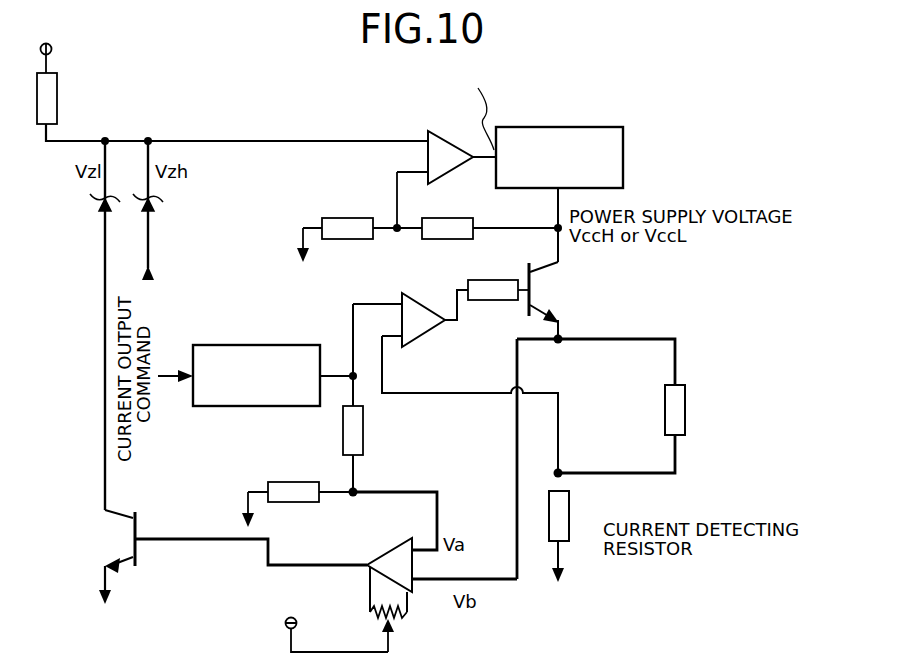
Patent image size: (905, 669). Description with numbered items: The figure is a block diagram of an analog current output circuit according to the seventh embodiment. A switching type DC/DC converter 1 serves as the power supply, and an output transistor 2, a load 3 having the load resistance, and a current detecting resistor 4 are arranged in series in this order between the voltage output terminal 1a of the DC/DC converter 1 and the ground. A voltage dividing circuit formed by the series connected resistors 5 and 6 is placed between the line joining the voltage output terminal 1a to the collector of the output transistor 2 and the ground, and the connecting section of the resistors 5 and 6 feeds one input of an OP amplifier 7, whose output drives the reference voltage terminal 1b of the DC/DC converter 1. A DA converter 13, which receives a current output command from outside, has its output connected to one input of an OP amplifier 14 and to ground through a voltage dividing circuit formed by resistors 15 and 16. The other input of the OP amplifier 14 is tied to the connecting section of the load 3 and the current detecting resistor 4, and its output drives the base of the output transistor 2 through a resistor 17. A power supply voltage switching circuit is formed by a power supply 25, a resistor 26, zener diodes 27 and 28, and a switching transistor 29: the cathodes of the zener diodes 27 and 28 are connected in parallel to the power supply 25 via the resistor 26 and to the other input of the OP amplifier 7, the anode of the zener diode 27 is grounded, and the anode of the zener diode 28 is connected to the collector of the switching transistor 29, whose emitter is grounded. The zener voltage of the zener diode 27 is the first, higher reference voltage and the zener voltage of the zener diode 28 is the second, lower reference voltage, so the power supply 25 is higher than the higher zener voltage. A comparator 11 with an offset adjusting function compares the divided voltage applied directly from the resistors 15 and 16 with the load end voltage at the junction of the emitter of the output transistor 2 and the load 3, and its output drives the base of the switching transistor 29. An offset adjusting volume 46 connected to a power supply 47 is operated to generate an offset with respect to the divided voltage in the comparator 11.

The DC/DC converter 1 is at (610, 126).
The voltage output terminal 1a is at (552, 198).
The reference voltage terminal 1b is at (479, 108).
The output transistor 2 is at (526, 306).
The load 3 is at (686, 410).
The current detecting resistor 4 is at (569, 513).
The resistor 5 is at (459, 216).
The resistor 6 is at (359, 216).
The OP amplifier 7 is at (448, 134).
The comparator 11 is at (384, 557).
The DA converter 13 is at (296, 343).
The OP amplifier 14 is at (414, 295).
The resistor 15 is at (363, 431).
The resistor 16 is at (300, 480).
The resistor 17 is at (505, 279).
The power supply 25 is at (52, 49).
The resistor 26 is at (57, 102).
The zener diode 27 is at (154, 207).
The zener diode 28 is at (100, 207).
The switching transistor 29 is at (137, 524).
The offset adjusting volume 46 is at (400, 622).
The power supply 47 is at (295, 616).